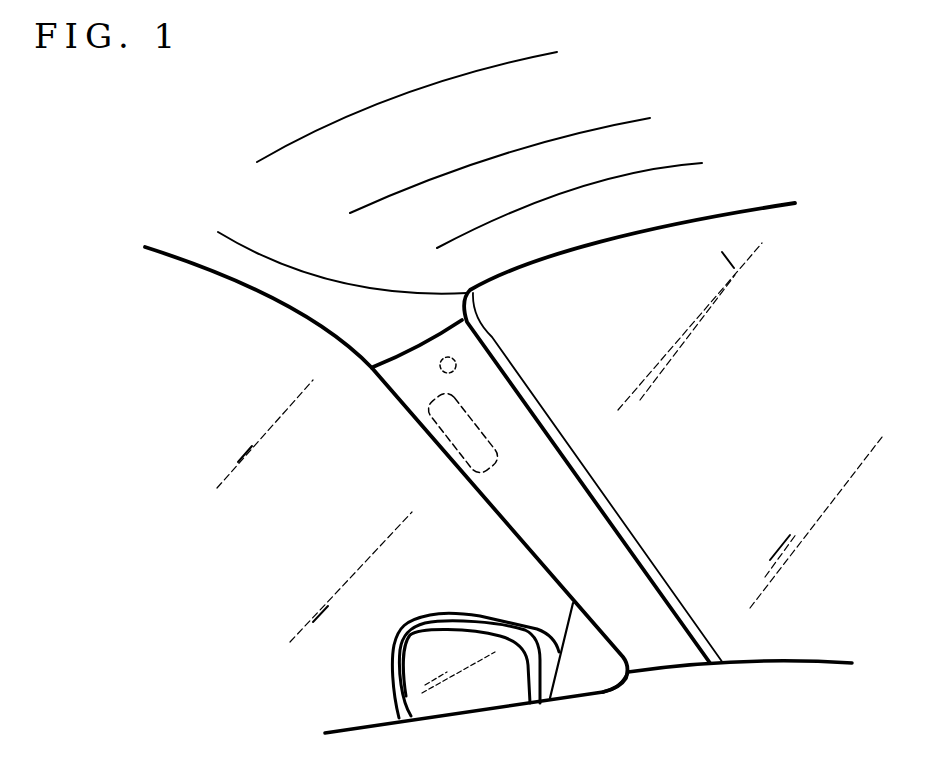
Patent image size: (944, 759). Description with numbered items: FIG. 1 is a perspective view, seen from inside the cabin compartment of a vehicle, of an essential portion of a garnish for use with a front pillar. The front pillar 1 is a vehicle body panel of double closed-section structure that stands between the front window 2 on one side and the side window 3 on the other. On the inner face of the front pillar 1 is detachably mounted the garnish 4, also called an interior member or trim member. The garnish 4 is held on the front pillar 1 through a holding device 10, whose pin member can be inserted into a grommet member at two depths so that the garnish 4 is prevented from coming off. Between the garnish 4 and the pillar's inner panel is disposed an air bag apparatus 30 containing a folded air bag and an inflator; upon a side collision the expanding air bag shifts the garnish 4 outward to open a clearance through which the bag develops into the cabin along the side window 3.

The front pillar 1 is at (572, 445).
The front window 2 is at (710, 345).
The side window 3 is at (313, 542).
The garnish 4 is at (600, 552).
The holding device 10 is at (458, 361).
The air bag apparatus 30 is at (467, 438).